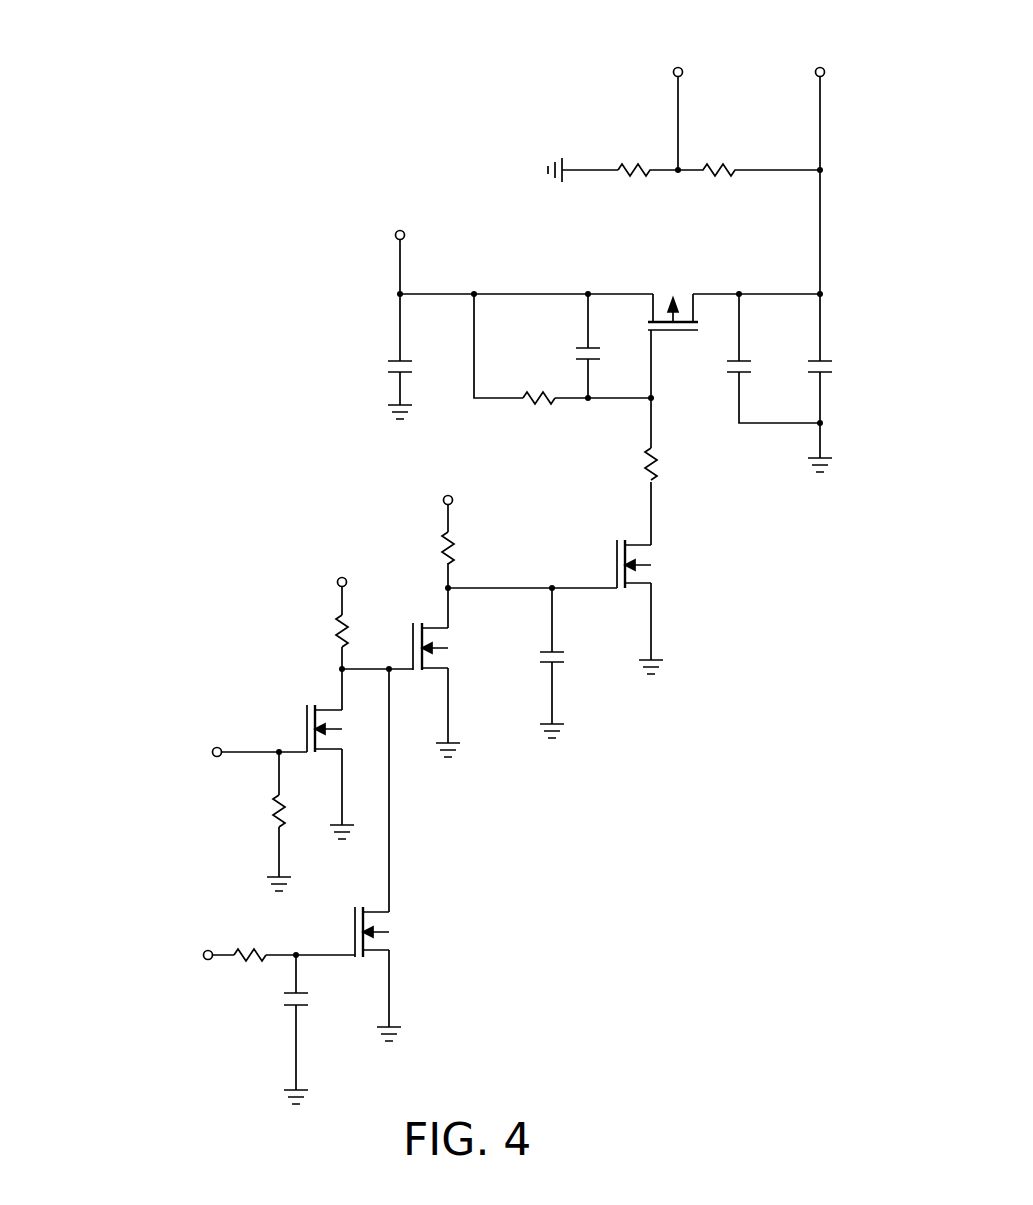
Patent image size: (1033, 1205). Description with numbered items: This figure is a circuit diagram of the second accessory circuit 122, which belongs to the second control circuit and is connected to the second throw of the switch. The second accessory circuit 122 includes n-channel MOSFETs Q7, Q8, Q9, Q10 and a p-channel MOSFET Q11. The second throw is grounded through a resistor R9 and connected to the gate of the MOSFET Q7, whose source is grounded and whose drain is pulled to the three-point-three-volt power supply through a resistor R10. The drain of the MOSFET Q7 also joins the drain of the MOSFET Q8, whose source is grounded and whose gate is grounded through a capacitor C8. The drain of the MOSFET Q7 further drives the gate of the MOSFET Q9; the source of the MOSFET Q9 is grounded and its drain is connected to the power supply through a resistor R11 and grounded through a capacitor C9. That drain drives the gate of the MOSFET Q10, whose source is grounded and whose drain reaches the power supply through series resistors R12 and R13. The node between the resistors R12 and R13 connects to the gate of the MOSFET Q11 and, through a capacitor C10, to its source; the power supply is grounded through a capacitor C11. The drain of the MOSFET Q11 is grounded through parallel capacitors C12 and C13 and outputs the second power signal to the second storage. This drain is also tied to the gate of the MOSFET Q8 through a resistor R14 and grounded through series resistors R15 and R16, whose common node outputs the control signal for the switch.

The second accessory circuit 122 is at (410, 100).
The MOSFET Q7 is at (341, 728).
The MOSFET Q8 is at (391, 932).
The MOSFET Q9 is at (452, 646).
The MOSFET Q10 is at (662, 564).
The MOSFET Q11 is at (677, 294).
The resistor R9 is at (257, 811).
The resistor R10 is at (318, 634).
The resistor R11 is at (428, 548).
The resistor R12 is at (624, 464).
The resistor R13 is at (544, 386).
The resistor R14 is at (254, 941).
The resistor R15 is at (749, 157).
The resistor R16 is at (648, 157).
The capacitor C8 is at (313, 1005).
The capacitor C9 is at (568, 662).
The capacitor C10 is at (611, 358).
The capacitor C11 is at (424, 382).
The capacitor C12 is at (762, 372).
The capacitor C13 is at (844, 372).